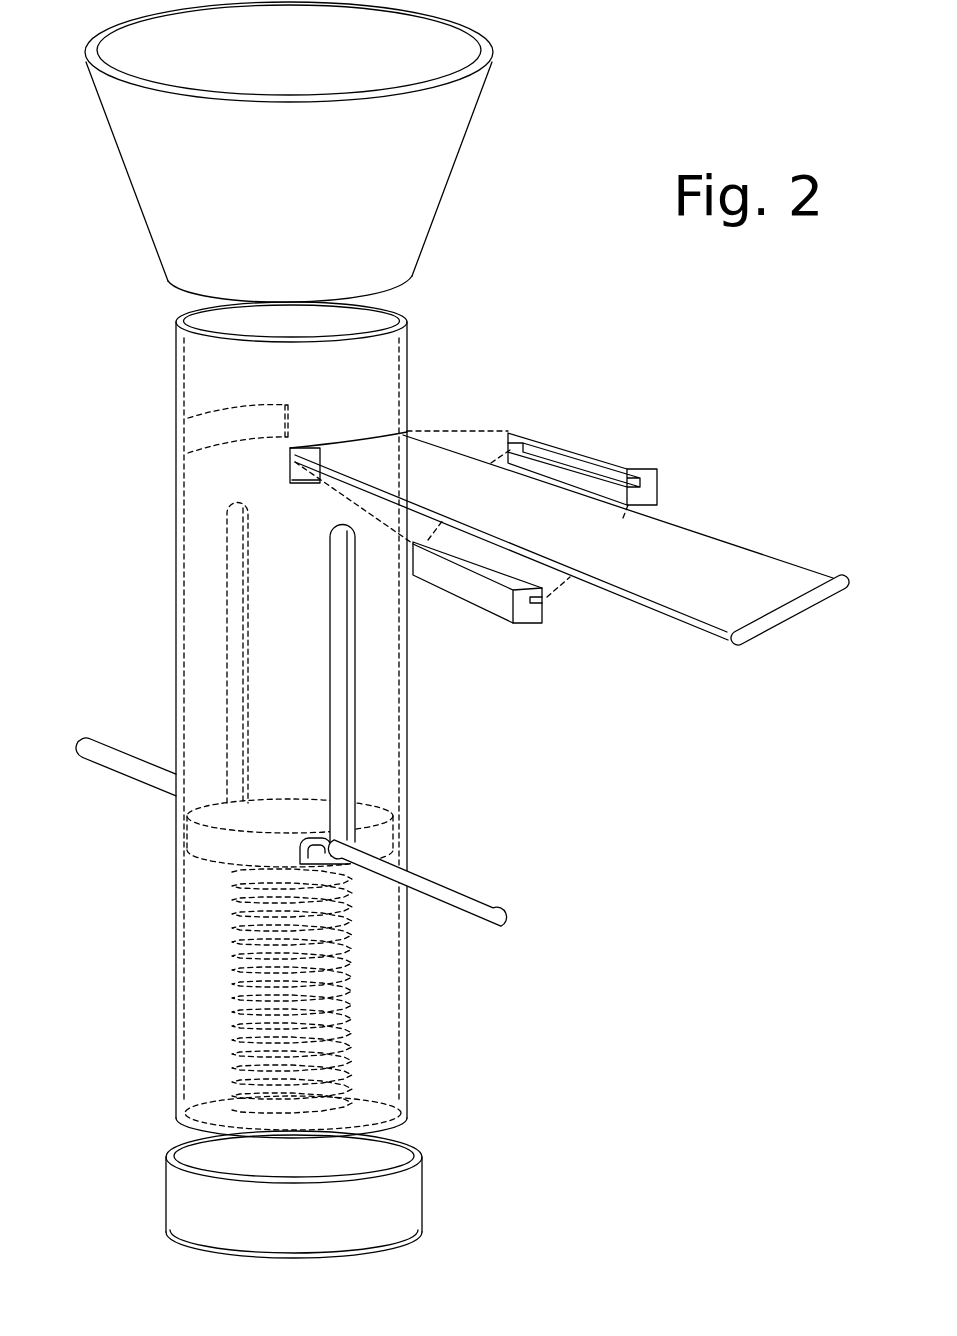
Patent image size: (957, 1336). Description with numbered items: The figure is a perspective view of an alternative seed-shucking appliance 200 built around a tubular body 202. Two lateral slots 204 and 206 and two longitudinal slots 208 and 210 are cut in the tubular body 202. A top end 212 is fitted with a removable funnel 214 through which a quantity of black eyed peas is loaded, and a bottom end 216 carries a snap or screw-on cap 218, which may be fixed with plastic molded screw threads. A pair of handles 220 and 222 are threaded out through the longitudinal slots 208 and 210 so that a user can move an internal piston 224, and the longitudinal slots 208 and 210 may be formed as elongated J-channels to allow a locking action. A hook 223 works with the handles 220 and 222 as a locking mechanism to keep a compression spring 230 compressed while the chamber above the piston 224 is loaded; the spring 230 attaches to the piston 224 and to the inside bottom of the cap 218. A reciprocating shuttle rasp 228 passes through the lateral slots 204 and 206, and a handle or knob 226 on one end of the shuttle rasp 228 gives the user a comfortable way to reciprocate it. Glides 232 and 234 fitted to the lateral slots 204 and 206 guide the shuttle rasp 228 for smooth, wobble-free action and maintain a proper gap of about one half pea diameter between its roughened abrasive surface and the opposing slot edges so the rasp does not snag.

The seed shucking appliance 200 is at (560, 301).
The tubular body 202 is at (175, 494).
The lateral slot 204 is at (269, 405).
The lateral slot 206 is at (288, 468).
The longitudinal slot 208 is at (252, 603).
The longitudinal slot 210 is at (330, 682).
The top end 212 is at (176, 316).
The removable funnel 214 is at (142, 200).
The bottom end 216 is at (173, 1117).
The cap 218 is at (165, 1210).
The handle 220 is at (112, 760).
The handle 222 is at (477, 910).
The hook 223 is at (295, 845).
The internal piston 224 is at (238, 860).
The handle or knob 226 is at (728, 645).
The reciprocating shuttle rasp 228 is at (668, 597).
The compression spring 230 is at (245, 960).
The glide 232 is at (544, 427).
The glide 234 is at (498, 607).